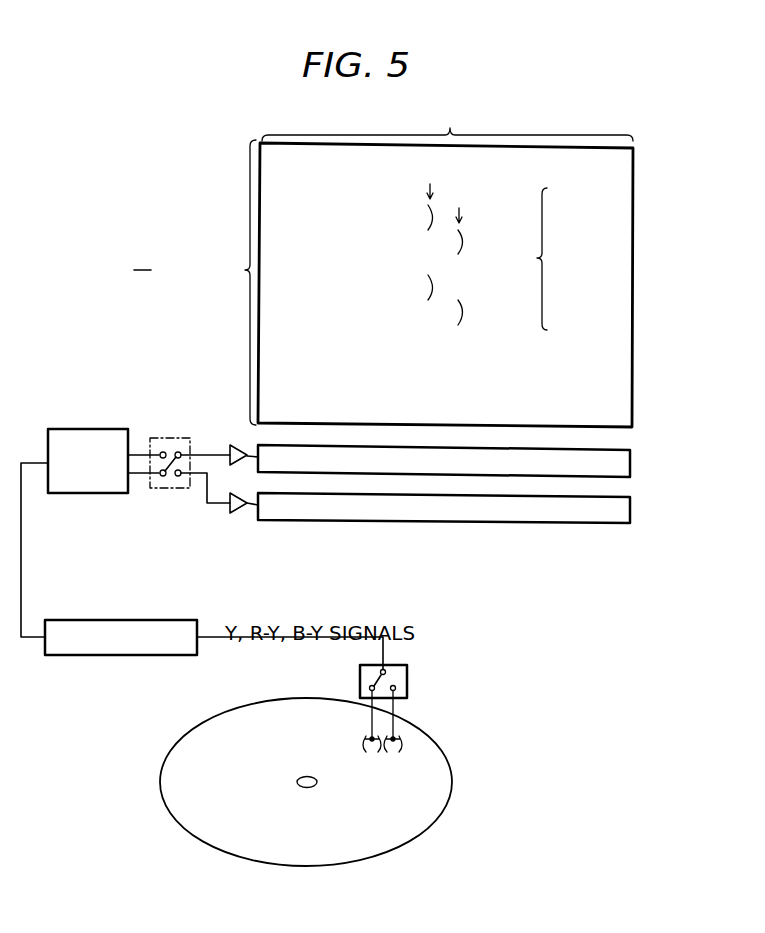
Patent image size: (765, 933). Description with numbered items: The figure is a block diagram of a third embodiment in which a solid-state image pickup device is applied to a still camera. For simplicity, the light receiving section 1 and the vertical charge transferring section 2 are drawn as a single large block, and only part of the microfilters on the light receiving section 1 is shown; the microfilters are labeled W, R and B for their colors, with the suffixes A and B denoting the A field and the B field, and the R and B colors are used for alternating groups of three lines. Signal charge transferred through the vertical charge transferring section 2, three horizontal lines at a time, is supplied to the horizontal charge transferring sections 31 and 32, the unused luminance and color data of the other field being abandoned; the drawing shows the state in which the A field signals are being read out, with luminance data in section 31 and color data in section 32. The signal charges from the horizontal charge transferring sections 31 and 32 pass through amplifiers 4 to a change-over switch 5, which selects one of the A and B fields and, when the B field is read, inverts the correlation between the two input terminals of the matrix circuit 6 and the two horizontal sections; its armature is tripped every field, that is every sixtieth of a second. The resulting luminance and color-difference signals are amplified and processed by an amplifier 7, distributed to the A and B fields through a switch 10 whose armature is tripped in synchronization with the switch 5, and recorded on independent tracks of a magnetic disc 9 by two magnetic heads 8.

The light receiving section 1 is at (383, 265).
The vertical charge transferring section 2 is at (625, 190).
The amplifiers 4 is at (243, 492).
The change-over switch 5 is at (158, 438).
The matrix circuit 6 is at (100, 435).
The amplifier 7 is at (170, 620).
The magnetic heads 8 is at (400, 745).
The magnetic disc 9 is at (400, 833).
The switch 10 is at (408, 678).
The horizontal charge transferring section 31 is at (631, 463).
The horizontal charge transferring section 32 is at (631, 505).